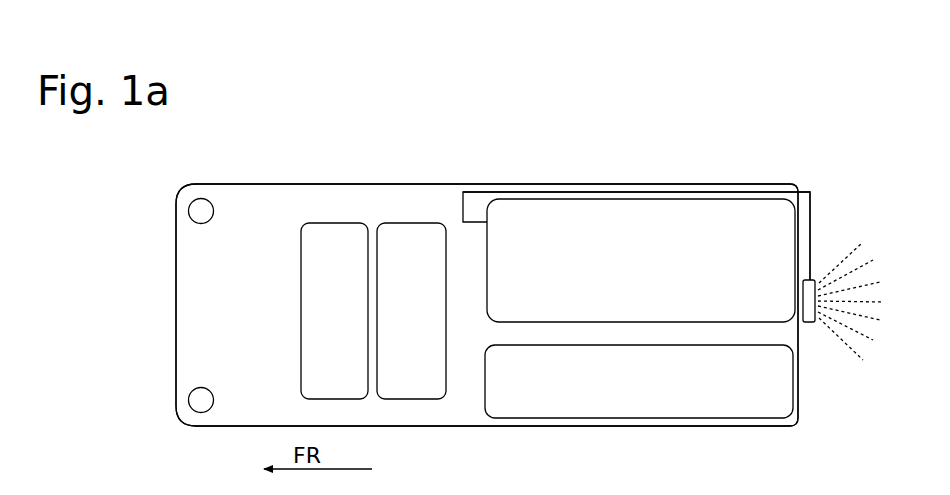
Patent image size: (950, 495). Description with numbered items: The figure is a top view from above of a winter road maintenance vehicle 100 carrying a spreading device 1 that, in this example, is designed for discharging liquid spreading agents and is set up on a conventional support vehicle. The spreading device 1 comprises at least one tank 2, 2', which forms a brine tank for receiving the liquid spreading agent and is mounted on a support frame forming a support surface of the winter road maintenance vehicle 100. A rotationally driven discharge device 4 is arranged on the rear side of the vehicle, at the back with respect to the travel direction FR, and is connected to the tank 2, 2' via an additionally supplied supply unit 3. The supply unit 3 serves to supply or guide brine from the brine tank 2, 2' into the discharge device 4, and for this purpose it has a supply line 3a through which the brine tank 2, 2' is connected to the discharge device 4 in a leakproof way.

The winter road maintenance vehicle 100 is at (333, 138).
The spreading device 1 is at (778, 118).
The tank 2 is at (639, 416).
The tank 2' is at (641, 226).
The supply unit 3 is at (818, 212).
The supply line 3a is at (673, 190).
The discharge device 4 is at (822, 337).